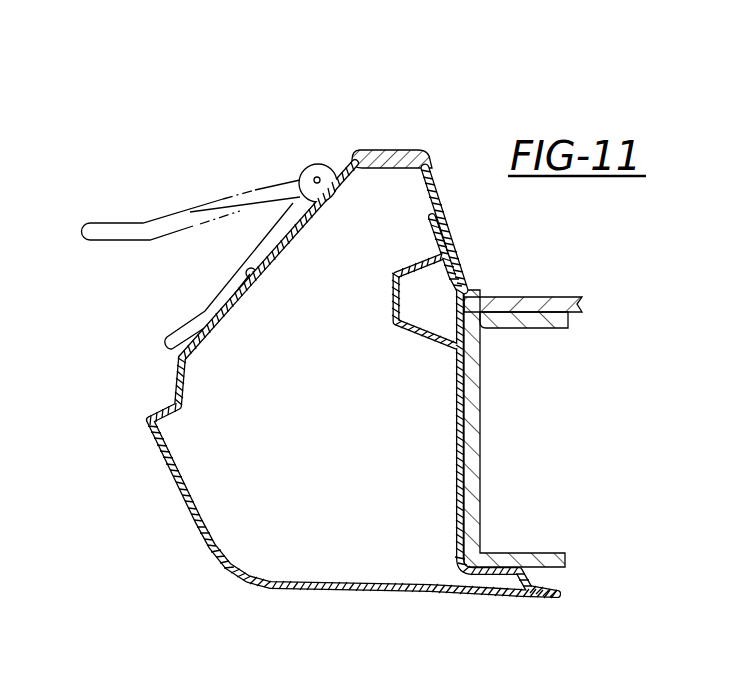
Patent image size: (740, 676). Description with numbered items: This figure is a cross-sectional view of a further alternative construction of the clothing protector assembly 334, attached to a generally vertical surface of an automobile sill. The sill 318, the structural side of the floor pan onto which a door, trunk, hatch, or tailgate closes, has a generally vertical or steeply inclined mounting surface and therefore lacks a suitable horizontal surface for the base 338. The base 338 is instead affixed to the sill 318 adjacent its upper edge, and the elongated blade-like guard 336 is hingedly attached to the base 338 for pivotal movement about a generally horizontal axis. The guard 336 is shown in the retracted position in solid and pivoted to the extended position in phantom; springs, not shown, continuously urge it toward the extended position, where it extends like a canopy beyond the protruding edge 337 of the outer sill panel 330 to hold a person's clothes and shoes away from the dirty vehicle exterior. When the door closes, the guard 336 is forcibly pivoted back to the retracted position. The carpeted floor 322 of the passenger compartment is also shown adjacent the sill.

The sill 318 is at (258, 270).
The floor 322 is at (540, 297).
The outer sill panel 330 is at (193, 522).
The clothing protector assembly 334 is at (235, 186).
The guard 336 is at (160, 200).
The protruding edge 337 is at (145, 418).
The base 338 is at (333, 160).